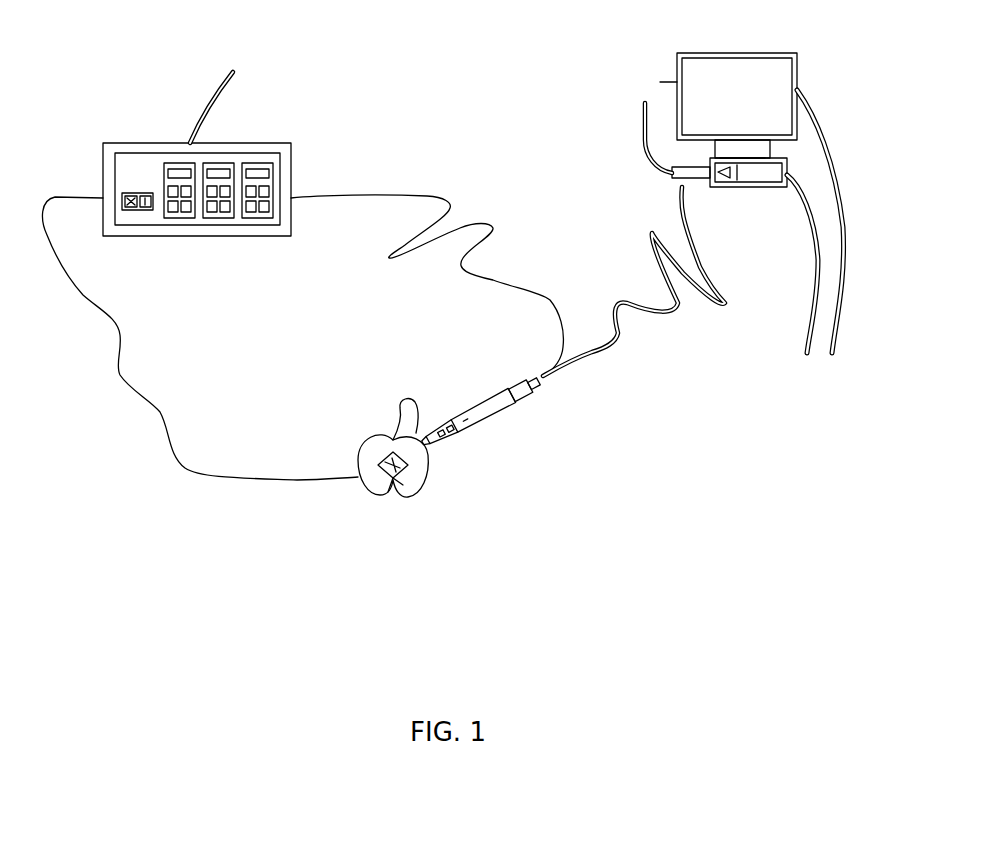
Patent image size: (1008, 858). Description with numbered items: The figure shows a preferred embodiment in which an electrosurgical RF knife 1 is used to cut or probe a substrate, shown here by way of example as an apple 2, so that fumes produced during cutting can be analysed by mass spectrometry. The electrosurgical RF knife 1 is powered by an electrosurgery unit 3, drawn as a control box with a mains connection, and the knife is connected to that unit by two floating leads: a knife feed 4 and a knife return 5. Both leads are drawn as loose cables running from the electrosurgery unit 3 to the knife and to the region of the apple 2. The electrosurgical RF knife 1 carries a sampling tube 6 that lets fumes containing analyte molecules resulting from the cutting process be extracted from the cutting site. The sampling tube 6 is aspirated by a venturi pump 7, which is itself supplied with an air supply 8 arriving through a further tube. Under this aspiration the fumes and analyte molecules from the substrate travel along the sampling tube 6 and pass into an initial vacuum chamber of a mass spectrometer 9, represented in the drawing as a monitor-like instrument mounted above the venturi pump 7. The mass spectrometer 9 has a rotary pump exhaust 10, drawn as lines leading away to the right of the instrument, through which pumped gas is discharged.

The electrosurgical RF knife 1 is at (482, 396).
The apple 2 is at (403, 482).
The electrosurgery unit 3 is at (262, 236).
The knife feed (floating) 4 is at (497, 278).
The knife return (floating) 5 is at (165, 418).
The sampling tube 6 is at (628, 330).
The venturi pump 7 is at (675, 182).
The air supply 8 is at (640, 135).
The mass spectrometer 9 is at (746, 113).
The rotary pump exhaust 10 is at (838, 176).